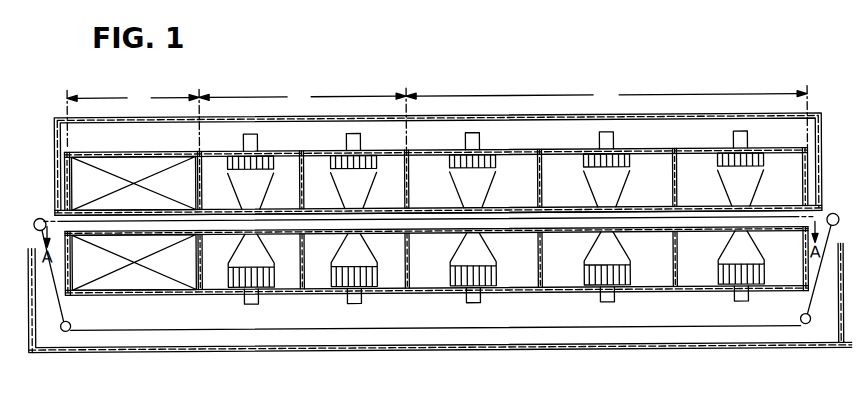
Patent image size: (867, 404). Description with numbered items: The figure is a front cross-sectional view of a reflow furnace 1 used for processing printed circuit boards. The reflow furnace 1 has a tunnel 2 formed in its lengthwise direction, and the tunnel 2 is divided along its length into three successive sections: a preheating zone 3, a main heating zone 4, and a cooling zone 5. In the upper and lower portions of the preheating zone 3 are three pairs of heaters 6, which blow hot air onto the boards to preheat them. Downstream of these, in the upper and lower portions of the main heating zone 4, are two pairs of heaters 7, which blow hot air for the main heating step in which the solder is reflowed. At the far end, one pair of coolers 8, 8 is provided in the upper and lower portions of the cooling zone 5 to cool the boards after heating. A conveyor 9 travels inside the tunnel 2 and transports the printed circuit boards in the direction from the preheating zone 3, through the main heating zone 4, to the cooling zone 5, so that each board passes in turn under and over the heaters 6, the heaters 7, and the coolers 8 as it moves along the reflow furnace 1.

The reflow furnace 1 is at (404, 381).
The tunnel 2 is at (808, 212).
The preheating zone 3 is at (606, 117).
The main heating zone 4 is at (302, 118).
The cooling zone 5 is at (133, 119).
The heaters 6 is at (524, 150).
The heaters 7 is at (284, 150).
The coolers 8 is at (136, 152).
The conveyor 9 is at (50, 214).